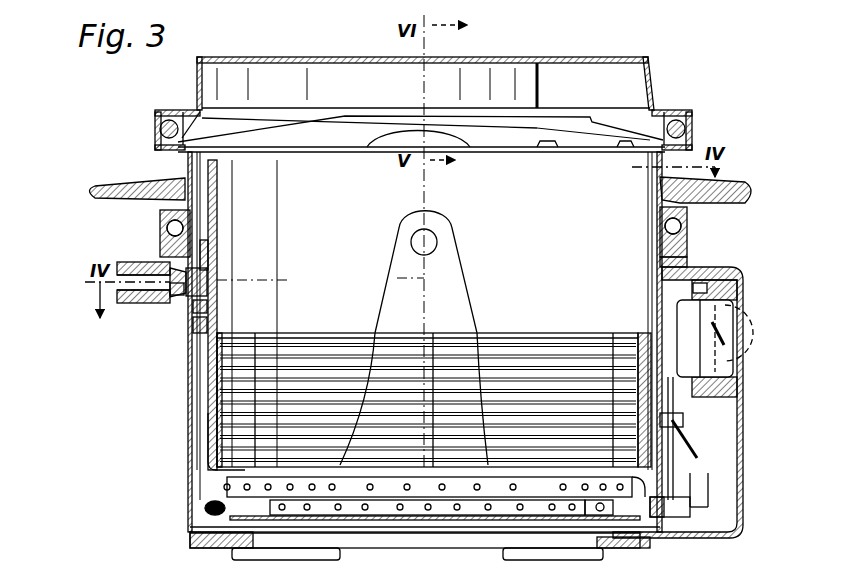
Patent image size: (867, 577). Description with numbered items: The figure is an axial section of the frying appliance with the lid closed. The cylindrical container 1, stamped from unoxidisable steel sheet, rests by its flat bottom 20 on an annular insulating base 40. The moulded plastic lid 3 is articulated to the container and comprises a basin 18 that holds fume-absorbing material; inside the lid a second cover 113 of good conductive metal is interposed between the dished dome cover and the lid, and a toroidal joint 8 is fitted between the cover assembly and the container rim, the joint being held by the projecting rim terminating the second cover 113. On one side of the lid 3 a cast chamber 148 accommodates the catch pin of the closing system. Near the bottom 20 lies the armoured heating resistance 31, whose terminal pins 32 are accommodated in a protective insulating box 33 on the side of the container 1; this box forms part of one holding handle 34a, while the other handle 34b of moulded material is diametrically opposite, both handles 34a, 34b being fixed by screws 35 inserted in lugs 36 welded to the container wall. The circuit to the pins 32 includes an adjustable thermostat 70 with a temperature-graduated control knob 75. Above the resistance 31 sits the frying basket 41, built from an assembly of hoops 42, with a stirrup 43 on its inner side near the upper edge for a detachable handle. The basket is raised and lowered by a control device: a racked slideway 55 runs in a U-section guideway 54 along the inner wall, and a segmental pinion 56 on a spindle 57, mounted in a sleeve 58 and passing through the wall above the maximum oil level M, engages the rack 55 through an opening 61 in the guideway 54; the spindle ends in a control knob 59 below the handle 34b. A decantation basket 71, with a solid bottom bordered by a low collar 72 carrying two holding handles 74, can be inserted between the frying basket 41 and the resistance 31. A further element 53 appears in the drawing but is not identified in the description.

The container 1 is at (660, 272).
The lid 3 is at (652, 72).
The toroidal joint 8 is at (158, 132).
The basin 18 is at (562, 45).
The bottom 20 is at (556, 528).
The heating resistance 31 is at (205, 510).
The terminal pins 32 is at (687, 512).
The protective insulating box 33 is at (743, 432).
The holding handle 34a is at (720, 184).
The handle 34b is at (132, 186).
The screws 35 is at (660, 224).
The lugs 36 is at (660, 238).
The annular insulating base 40 is at (195, 545).
The frying basket 41 is at (512, 330).
The hoops 42 is at (362, 377).
The stirrup 43 is at (636, 345).
The inner wall strip 53 is at (215, 395).
The guideway 54 is at (202, 196).
The racked slideway 55 is at (210, 308).
The segmental pinion 56 is at (195, 338).
The spindle 57 is at (179, 296).
The sleeve 58 is at (162, 262).
The control knob 59 is at (133, 302).
The opening 61 is at (203, 251).
The adjustable thermostat 70 is at (690, 336).
The decantation basket 71 is at (372, 498).
The low collar 72 is at (210, 488).
The holding handles 74 is at (458, 261).
The control knob 75 is at (742, 318).
The second cover 113 is at (563, 107).
The chamber 148 is at (695, 125).
The maximum level M is at (428, 337).